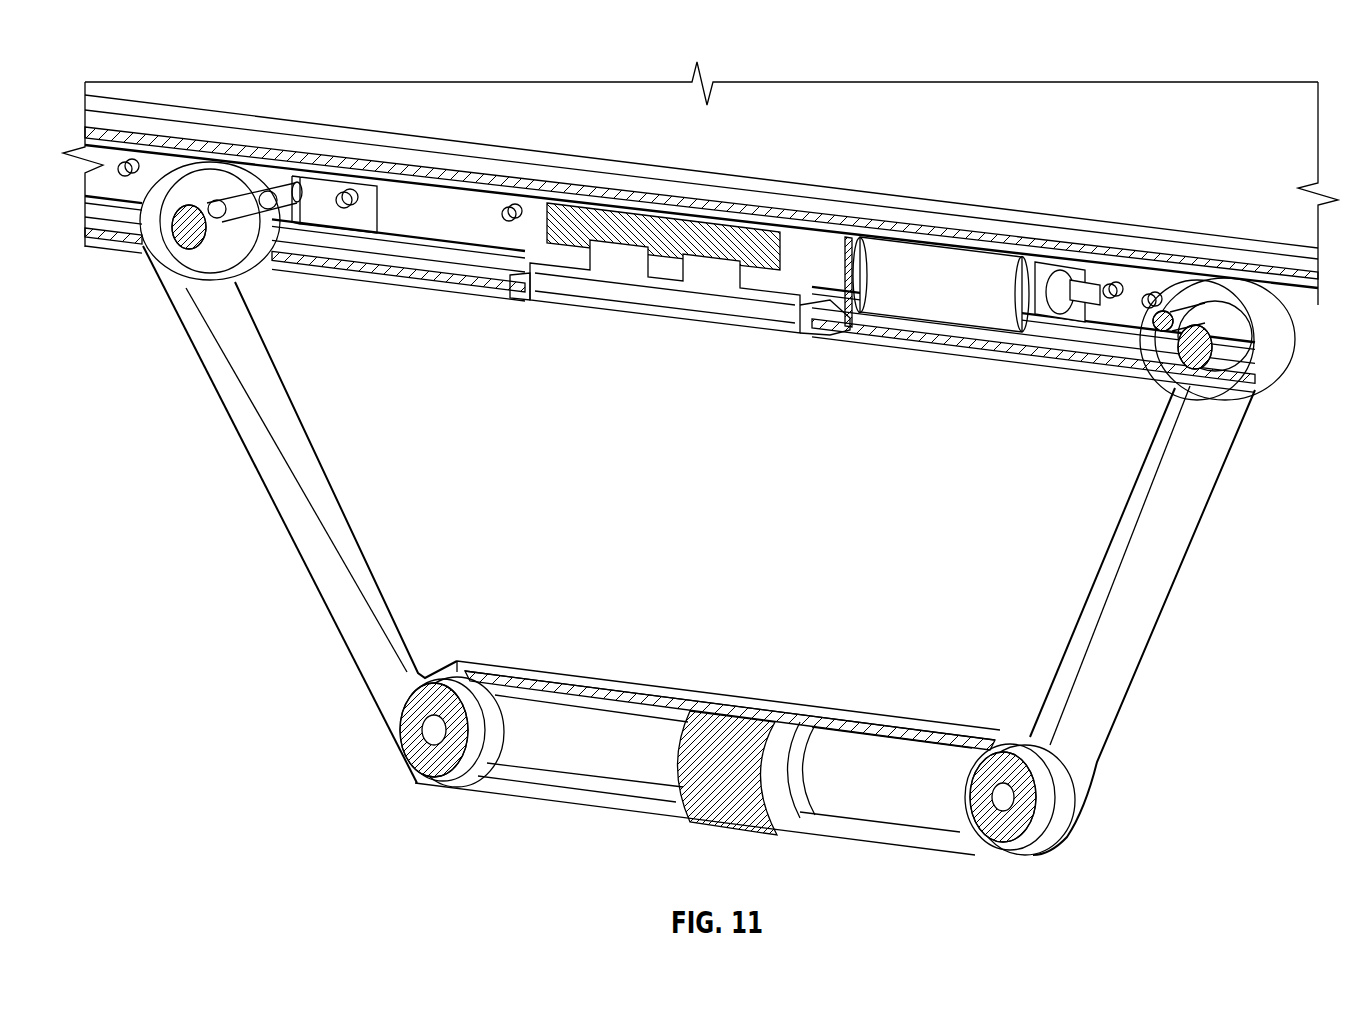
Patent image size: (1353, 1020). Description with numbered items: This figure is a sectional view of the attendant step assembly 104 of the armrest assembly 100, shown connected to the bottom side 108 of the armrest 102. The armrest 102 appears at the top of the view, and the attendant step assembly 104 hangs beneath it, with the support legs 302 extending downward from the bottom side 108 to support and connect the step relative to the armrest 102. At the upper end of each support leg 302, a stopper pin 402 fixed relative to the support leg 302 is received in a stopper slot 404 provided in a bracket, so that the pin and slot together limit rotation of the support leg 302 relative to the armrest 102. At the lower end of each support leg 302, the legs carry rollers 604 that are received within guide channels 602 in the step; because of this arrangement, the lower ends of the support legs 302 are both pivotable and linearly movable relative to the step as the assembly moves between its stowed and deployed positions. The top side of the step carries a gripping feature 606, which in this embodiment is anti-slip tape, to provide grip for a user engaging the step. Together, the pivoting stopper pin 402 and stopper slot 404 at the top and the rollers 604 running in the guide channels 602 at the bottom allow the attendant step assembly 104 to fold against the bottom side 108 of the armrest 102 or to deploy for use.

The armrest assembly 100 is at (290, 43).
The armrest 102 is at (505, 112).
The attendant step assembly 104 is at (178, 392).
The bottom side 108 is at (403, 253).
The support legs 302 is at (282, 450).
The stopper pin 402 is at (197, 236).
The stopper slot 404 is at (255, 248).
The guide channels 602 is at (610, 757).
The rollers 604 is at (415, 723).
The gripping feature 606 is at (786, 695).